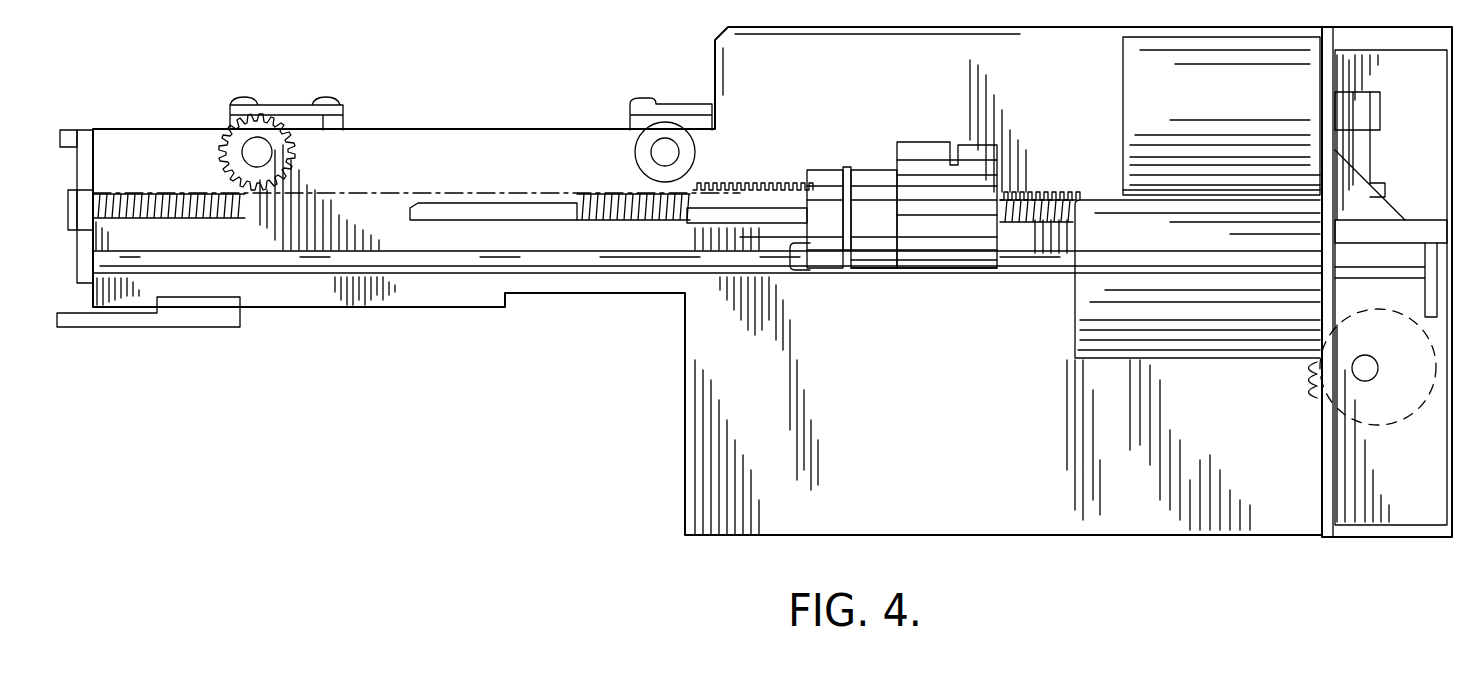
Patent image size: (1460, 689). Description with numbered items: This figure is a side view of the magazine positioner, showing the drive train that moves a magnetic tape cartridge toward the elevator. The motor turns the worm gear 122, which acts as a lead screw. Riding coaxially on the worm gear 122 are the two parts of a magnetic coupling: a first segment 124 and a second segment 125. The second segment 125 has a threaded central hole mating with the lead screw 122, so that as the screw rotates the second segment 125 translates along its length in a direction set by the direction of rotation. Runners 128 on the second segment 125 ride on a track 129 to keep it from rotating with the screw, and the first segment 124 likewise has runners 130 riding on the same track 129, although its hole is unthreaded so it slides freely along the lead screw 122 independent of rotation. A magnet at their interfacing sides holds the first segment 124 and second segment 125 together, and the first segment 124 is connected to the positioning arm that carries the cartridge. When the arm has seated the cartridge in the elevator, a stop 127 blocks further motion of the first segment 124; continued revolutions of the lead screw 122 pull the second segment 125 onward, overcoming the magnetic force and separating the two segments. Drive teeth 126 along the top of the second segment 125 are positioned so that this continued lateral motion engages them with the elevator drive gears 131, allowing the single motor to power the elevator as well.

The worm gear 122 is at (1060, 192).
The first segment 124 is at (878, 170).
The second segment 125 is at (828, 170).
The drive teeth 126 is at (740, 185).
The stop 127 is at (418, 207).
The runners 128 is at (790, 265).
The track 129 is at (777, 276).
The runners 130 is at (926, 260).
The elevator drive gears 131 is at (292, 146).